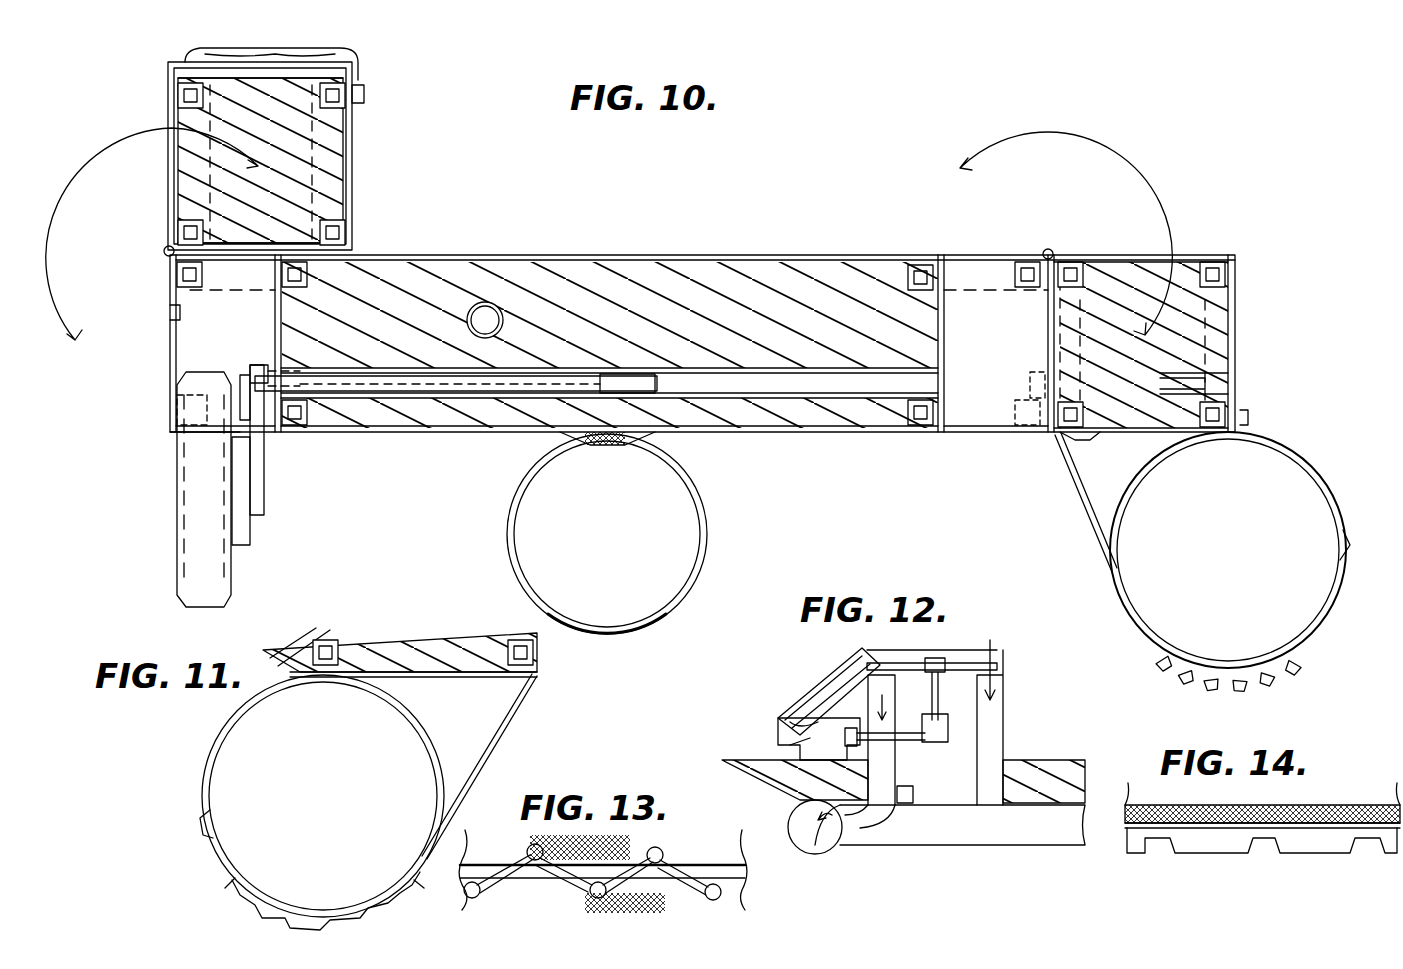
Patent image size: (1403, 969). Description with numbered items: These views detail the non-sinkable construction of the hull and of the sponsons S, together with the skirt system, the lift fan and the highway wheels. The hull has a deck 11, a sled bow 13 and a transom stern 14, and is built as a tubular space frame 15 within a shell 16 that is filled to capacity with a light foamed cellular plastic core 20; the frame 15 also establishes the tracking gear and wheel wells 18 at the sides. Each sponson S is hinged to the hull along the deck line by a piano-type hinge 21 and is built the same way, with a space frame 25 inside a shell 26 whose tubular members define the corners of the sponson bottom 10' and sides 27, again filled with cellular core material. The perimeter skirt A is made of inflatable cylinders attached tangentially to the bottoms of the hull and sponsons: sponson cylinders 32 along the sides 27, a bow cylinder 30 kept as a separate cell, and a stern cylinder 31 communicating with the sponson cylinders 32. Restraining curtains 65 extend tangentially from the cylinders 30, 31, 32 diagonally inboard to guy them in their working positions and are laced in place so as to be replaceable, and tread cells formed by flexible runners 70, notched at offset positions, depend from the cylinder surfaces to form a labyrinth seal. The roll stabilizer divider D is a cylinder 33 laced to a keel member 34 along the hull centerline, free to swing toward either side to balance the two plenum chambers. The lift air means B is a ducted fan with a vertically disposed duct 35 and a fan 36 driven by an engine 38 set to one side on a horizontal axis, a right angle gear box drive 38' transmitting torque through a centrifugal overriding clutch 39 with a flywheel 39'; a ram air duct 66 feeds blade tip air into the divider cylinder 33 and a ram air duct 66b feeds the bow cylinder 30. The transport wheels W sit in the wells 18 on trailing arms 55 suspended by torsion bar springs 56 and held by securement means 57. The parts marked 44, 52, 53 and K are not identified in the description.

In FIG. 10, the sponson bottom 10' is at (1154, 437).
In FIG. 10, the deck 11 is at (1175, 263).
In FIG. 11, the sled bow 13 is at (180, 800).
In FIG. 10, the transom stern 14 is at (1235, 640).
In FIG. 10, the space frame 15 is at (310, 265).
In FIG. 11, the space frame 15 is at (345, 645).
In FIG. 10, the shell 16 is at (830, 262).
In FIG. 11, the shell 16 is at (440, 673).
In FIG. 10, the tracking gear and wheel wells 18 is at (612, 308).
In FIG. 10, the foamed cellular plastic core 20 is at (620, 268).
In FIG. 11, the foamed cellular plastic core 20 is at (440, 652).
In FIG. 12, the foamed cellular plastic core 20 is at (1022, 772).
In FIG. 10, the piano-type hinge 21 is at (164, 251).
In FIG. 10, the space frame 25 is at (350, 128).
In FIG. 10, the shell 26 is at (353, 142).
In FIG. 10, the sponson sides 27 is at (353, 191).
In FIG. 11, the bow cylinder 30 is at (205, 746).
In FIG. 12, the bow cylinder 30 is at (792, 843).
In FIG. 10, the stern cylinder 31 is at (664, 633).
In FIG. 10, the sponson cylinders 32 is at (1325, 480).
In FIG. 14, the sponson cylinders 32 is at (1283, 810).
In FIG. 10, the divider cylinder 33 is at (707, 544).
In FIG. 10, the keel member 34 is at (560, 434).
In FIG. 12, the duct 35 is at (929, 788).
In FIG. 12, the fan 36 is at (968, 662).
In FIG. 12, the engine prime mover 38 is at (799, 739).
In FIG. 12, the right angle gear box drive 38' is at (950, 720).
In FIG. 12, the centrifugal overriding clutch 39 is at (893, 747).
In FIG. 12, the flywheel 39' is at (828, 744).
In FIG. 10, the conduit 44 is at (485, 300).
In FIG. 10, the lugs 52 is at (1185, 675).
In FIG. 11, the lugs 53 is at (232, 895).
In FIG. 10, the trailing arms 55 is at (264, 452).
In FIG. 10, the torsion bar springs 56 is at (388, 380).
In FIG. 10, the securement means 57 is at (268, 362).
In FIG. 10, the restraining curtains 65 is at (1088, 500).
In FIG. 11, the restraining curtains 65 is at (515, 727).
In FIG. 14, the restraining curtains 65 is at (1198, 808).
In FIG. 12, the ram air duct 66 is at (990, 720).
In FIG. 12, the ram air duct 66b is at (885, 768).
In FIG. 14, the flexible runners 70 is at (1210, 845).
In FIG. 10, the air cushion skirt A is at (374, 60).
In FIG. 11, the air cushion skirt A is at (196, 740).
In FIG. 12, the air cushion skirt A is at (775, 822).
In FIG. 13, the air cushion skirt A is at (519, 843).
In FIG. 14, the air cushion skirt A is at (1362, 798).
In FIG. 12, the lift air means B is at (1017, 665).
In FIG. 10, the air cushion roll stabilizer divider D is at (722, 524).
In FIG. 12, the air cushion roll stabilizer divider D is at (945, 845).
In FIG. 10, the direction K is at (746, 247).
In FIG. 12, the direction K is at (1080, 764).
In FIG. 10, the sponsons S is at (373, 174).
In FIG. 10, the transport wheels W is at (166, 498).